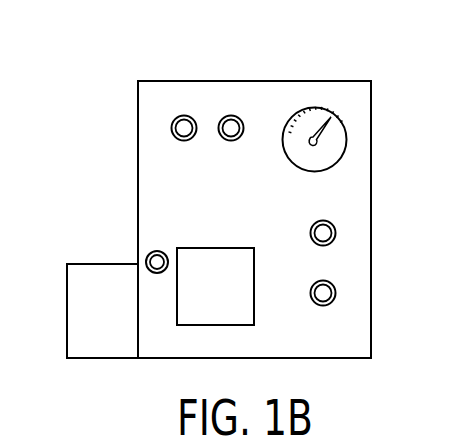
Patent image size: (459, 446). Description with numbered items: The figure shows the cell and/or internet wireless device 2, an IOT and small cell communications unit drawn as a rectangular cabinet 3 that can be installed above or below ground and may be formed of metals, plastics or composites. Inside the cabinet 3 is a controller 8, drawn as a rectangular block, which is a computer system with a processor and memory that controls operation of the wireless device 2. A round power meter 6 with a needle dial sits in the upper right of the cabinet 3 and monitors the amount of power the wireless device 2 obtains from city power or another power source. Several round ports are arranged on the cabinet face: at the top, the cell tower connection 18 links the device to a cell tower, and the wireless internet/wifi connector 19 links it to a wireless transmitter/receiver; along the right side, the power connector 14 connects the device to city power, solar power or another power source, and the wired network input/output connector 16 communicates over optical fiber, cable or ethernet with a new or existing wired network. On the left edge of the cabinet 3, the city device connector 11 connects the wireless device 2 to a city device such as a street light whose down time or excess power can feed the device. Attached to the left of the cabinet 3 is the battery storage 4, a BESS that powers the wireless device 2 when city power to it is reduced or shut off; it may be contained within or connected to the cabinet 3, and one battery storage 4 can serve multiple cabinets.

The cell and/or internet wireless device 2 is at (373, 205).
The cabinet 3 is at (348, 173).
The battery storage 4 is at (87, 264).
The power meter 6 is at (343, 130).
The controller 8 is at (213, 248).
The city device connector 11 is at (150, 253).
The power connector 14 is at (336, 236).
The wired network input/output connector 16 is at (336, 296).
The cell tower connection 18 is at (171, 125).
The wireless internet/wifi connector 19 is at (232, 114).